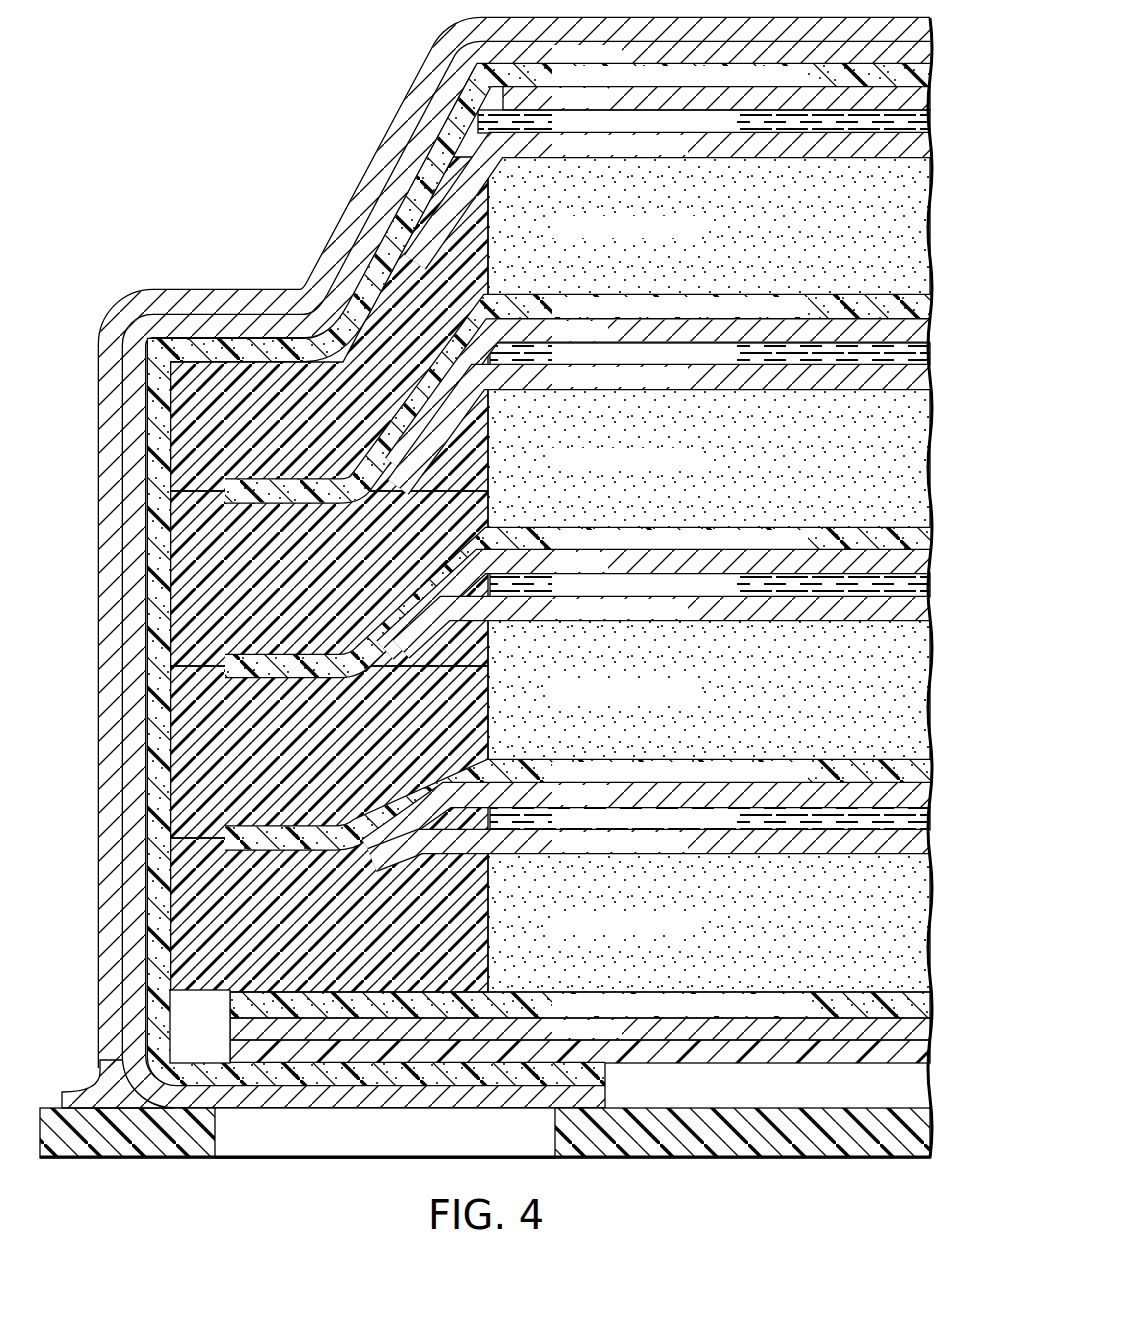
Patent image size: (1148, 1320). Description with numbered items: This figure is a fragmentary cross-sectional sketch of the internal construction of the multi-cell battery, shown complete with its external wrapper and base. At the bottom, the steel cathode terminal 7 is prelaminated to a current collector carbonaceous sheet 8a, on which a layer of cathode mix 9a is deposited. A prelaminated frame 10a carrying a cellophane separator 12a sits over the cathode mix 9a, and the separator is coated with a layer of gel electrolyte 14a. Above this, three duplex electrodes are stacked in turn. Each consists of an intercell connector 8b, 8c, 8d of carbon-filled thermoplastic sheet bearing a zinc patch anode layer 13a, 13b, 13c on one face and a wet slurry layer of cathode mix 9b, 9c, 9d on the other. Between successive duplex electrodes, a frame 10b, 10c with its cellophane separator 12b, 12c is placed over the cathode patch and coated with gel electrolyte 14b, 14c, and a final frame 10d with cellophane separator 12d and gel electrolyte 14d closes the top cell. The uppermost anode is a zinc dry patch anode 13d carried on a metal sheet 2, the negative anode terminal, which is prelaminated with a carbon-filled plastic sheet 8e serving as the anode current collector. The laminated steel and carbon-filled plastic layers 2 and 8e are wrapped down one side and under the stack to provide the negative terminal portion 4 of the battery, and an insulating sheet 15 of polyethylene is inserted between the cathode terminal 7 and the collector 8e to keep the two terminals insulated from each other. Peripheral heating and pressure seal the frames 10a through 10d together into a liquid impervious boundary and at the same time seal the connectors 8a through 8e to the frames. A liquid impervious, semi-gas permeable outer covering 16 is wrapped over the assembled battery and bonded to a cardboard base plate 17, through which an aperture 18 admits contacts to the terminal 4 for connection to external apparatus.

The metal sheet 2 is at (908, 54).
The negative terminal portion 4 is at (318, 1110).
The cathode terminal 7 is at (908, 1029).
The current collector carbonaceous sheet 8a is at (908, 1004).
The intercell connector 8b is at (908, 772).
The intercell connector 8c is at (908, 540).
The intercell connector 8d is at (908, 307).
The carbon-filled plastic sheet 8e is at (908, 77).
The cathode mix 9a is at (908, 921).
The cathode mix 9b is at (908, 690).
The cathode mix 9c is at (908, 457).
The cathode mix 9d is at (908, 226).
The frame 10a is at (273, 933).
The frame 10b is at (268, 770).
The frame 10c is at (268, 593).
The frame 10d is at (268, 433).
The cellophane separator 12a is at (908, 841).
The cellophane separator 12b is at (908, 608).
The cellophane separator 12c is at (908, 378).
The cellophane separator 12d is at (908, 145).
The zinc patch anode layer 13a is at (908, 795).
The zinc patch anode layer 13b is at (908, 563).
The zinc patch anode layer 13c is at (908, 332).
The zinc dry patch anode 13d is at (908, 100).
The gel electrolyte 14a is at (908, 818).
The gel electrolyte 14b is at (908, 585).
The gel electrolyte 14c is at (908, 355).
The gel electrolyte 14d is at (908, 122).
The insulating sheet 15 is at (908, 1052).
The outer covering 16 is at (908, 33).
The cardboard base plate 17 is at (908, 1135).
The aperture 18 is at (217, 1112).